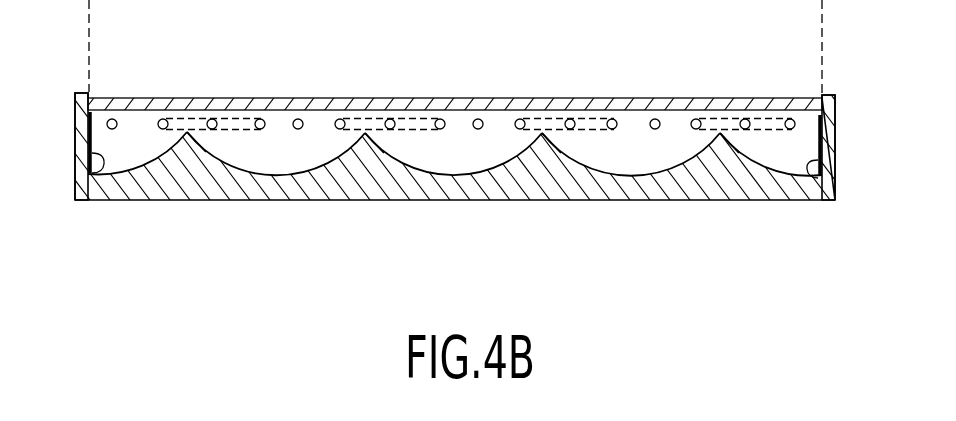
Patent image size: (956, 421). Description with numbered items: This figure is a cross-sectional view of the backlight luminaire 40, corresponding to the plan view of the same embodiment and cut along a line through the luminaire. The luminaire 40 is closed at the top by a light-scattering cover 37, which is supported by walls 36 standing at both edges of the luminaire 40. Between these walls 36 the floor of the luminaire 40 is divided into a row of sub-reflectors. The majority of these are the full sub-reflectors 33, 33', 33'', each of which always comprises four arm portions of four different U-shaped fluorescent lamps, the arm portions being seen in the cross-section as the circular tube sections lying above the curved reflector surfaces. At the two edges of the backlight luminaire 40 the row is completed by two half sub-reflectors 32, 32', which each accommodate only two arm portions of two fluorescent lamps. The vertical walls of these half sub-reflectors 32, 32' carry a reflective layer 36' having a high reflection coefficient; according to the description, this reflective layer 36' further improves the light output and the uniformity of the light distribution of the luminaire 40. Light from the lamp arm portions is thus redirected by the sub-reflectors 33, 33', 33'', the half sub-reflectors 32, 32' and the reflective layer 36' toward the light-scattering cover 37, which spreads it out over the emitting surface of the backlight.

The half sub-reflector 32 is at (147, 193).
The half sub-reflector 32' is at (771, 194).
The sub-reflector 33 is at (285, 193).
The sub-reflector 33' is at (463, 194).
The sub-reflector 33'' is at (640, 194).
The wall 36 is at (456, 146).
The reflective layer 36' is at (458, 175).
The light-scattering cover 37 is at (465, 97).
The backlight luminaire 40 is at (786, 78).